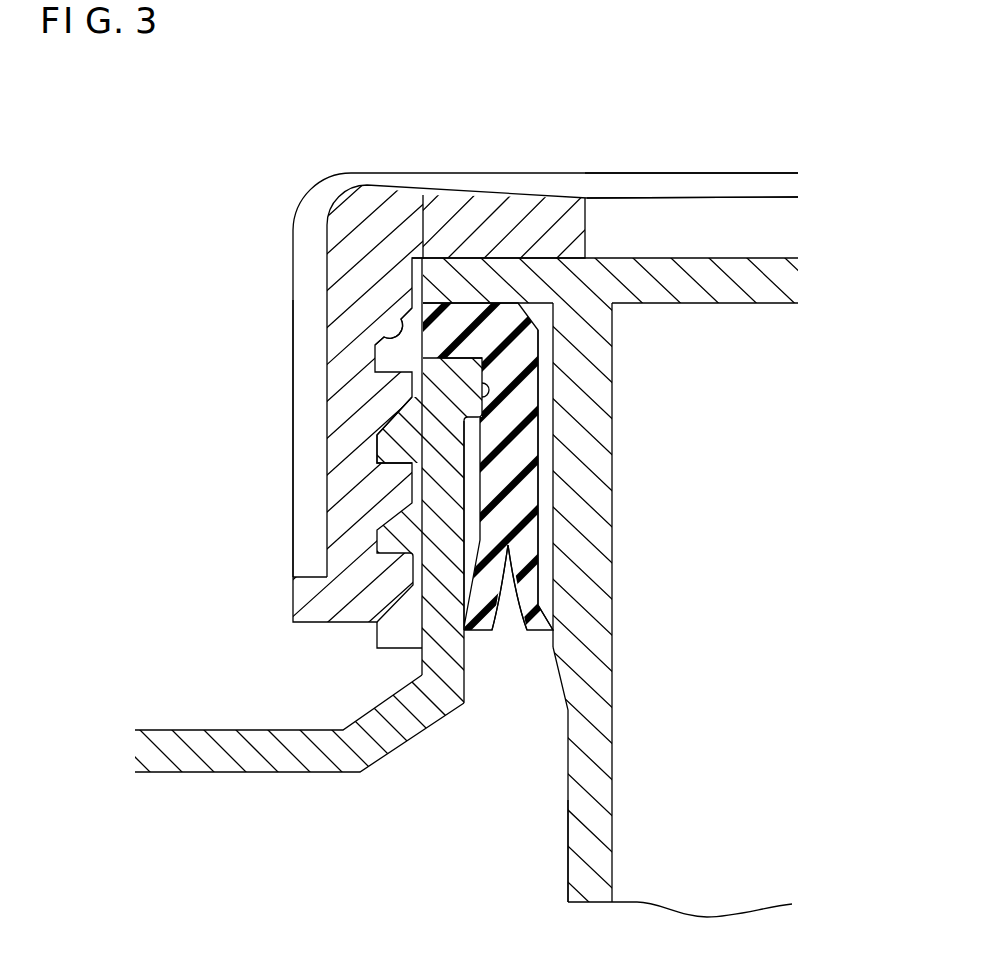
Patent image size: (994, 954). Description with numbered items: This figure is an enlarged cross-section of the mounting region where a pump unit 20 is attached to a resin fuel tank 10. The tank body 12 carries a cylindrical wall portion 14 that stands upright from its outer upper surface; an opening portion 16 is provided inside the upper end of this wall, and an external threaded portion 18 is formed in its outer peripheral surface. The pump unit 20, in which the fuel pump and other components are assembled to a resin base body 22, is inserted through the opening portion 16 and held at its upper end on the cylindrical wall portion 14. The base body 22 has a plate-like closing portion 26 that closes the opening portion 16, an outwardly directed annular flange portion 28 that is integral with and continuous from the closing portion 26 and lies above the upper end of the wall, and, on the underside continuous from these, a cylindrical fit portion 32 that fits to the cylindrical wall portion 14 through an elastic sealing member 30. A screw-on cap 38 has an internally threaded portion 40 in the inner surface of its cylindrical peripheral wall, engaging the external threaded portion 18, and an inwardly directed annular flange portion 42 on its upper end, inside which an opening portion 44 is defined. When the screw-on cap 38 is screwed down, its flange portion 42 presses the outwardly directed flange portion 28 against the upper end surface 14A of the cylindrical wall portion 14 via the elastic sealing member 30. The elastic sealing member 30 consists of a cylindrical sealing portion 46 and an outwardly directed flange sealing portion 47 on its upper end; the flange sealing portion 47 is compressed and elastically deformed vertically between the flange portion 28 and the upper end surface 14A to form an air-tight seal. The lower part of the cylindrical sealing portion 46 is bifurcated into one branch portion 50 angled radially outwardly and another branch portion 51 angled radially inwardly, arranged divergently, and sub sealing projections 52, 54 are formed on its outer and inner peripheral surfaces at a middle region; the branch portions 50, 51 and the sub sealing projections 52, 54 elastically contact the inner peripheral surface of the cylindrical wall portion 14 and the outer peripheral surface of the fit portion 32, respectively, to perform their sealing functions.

The resin fuel tank 10 is at (180, 591).
The tank body 12 is at (236, 746).
The cylindrical wall portion 14 is at (377, 535).
The upper end surface 14A is at (466, 352).
The opening portion 16 is at (472, 400).
The external threaded portion 18 is at (386, 449).
The pump unit 20 is at (548, 840).
The base body 22 is at (568, 800).
The closing portion 26 is at (732, 270).
The outwardly directed annular flange portion 28 is at (443, 265).
The elastic sealing member 30 is at (540, 429).
The fit portion 32 is at (588, 511).
The screw-on cap 38 is at (293, 261).
The internally threaded portion 40 is at (378, 343).
The inwardly directed annular flange portion 42 is at (528, 215).
The opening portion 44 is at (590, 212).
The cylindrical sealing portion 46 is at (528, 392).
The flange sealing portion 47 is at (473, 317).
The one branch portion 50 is at (486, 620).
The other branch portion 51 is at (537, 572).
The sub sealing projection 52 is at (470, 496).
The sub sealing projection 54 is at (546, 476).